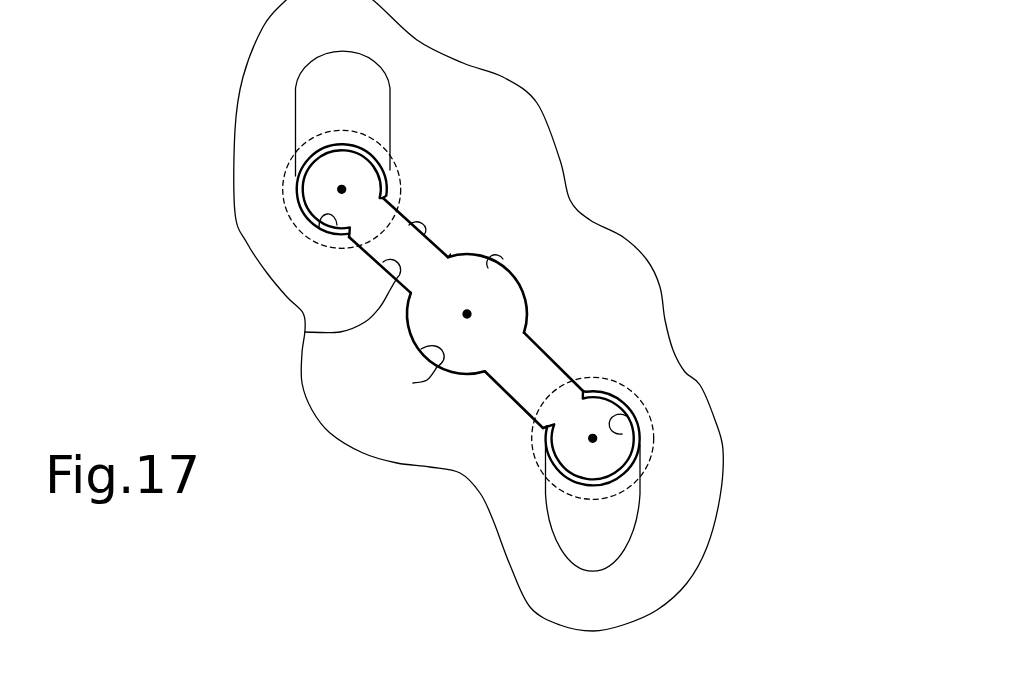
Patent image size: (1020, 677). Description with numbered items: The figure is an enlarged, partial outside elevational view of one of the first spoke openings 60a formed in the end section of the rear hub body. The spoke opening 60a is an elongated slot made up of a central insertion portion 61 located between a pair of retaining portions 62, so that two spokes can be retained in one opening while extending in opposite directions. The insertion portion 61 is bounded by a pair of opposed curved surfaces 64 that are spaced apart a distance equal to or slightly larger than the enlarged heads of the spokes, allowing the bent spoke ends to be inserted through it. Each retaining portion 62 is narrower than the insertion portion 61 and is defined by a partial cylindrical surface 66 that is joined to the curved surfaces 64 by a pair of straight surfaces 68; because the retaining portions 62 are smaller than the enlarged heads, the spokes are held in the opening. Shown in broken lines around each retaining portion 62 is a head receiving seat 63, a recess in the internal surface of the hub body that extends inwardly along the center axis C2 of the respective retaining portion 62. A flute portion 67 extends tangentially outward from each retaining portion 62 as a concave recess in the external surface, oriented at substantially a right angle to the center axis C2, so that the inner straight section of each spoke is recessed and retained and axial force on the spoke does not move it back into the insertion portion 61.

The first spoke opening 60a is at (544, 312).
The insertion portion 61 is at (413, 383).
The retaining portion 62 is at (316, 218).
The head receiving seat 63 is at (402, 173).
The curved surface 64 is at (492, 258).
The partial cylindrical surface 66 is at (302, 208).
The flute portion 67 is at (363, 102).
The straight surface 68 is at (417, 223).
The center axis of retaining portion C2 is at (672, 482).